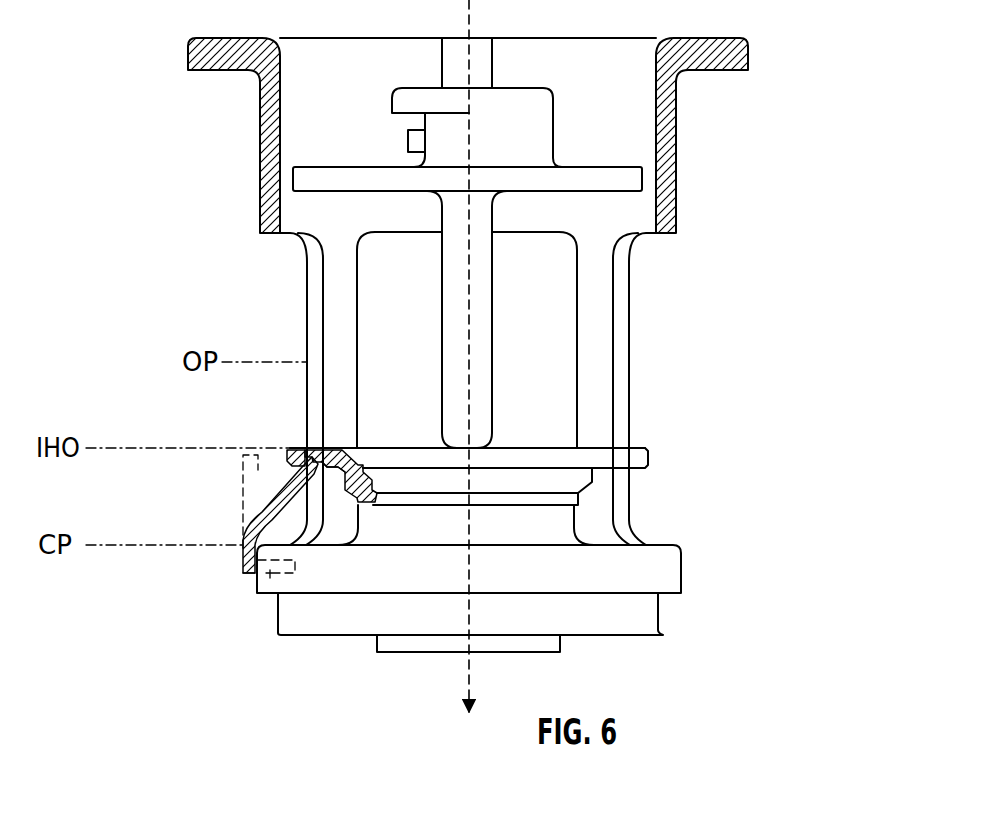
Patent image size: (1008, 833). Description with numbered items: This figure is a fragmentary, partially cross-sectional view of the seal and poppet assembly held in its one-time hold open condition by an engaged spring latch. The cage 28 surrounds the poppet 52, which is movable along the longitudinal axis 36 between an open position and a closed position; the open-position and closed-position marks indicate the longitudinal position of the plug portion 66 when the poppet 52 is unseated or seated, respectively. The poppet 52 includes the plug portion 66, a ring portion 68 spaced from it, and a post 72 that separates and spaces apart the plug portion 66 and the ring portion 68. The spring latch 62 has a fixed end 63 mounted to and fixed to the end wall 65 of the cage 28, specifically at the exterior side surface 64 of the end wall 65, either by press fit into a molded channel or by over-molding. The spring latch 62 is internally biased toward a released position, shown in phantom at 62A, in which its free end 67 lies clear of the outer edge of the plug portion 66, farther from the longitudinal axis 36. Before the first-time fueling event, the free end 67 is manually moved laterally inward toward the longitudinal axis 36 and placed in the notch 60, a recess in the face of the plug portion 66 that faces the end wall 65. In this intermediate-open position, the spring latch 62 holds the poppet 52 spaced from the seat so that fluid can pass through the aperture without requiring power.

The cage 28 is at (677, 160).
The ring portion 68 is at (333, 183).
The post 72 is at (474, 353).
The poppet 52 is at (552, 402).
The plug portion 66 is at (645, 448).
The free end 67 is at (318, 452).
The notch 60 is at (323, 481).
The spring latch 62 is at (246, 546).
The released position 62A is at (231, 474).
The exterior side surface 64 is at (248, 578).
The fixed end 63 is at (270, 578).
The end wall 65 is at (652, 568).
The longitudinal axis 36 is at (470, 668).